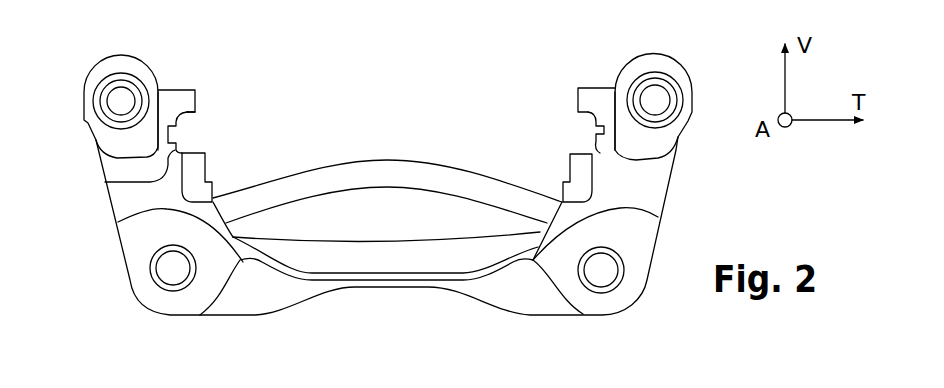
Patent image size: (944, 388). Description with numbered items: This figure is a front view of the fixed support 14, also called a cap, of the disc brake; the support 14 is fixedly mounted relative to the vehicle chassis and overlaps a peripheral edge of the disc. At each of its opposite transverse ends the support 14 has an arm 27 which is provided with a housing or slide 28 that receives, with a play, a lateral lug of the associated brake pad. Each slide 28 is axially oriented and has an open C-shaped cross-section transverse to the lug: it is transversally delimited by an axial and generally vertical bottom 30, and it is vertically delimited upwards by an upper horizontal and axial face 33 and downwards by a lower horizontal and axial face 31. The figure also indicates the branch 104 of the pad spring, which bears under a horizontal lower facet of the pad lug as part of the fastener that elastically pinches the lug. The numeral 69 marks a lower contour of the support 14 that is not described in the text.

The fixed support 14 is at (126, 328).
The arm 27 is at (166, 102).
The slide 28 is at (195, 137).
The bottom 30 is at (193, 123).
The lower horizontal and axial face 31 is at (192, 153).
The upper horizontal and axial face 33 is at (190, 124).
The lower contour 69 is at (105, 182).
The branch 104 is at (190, 100).